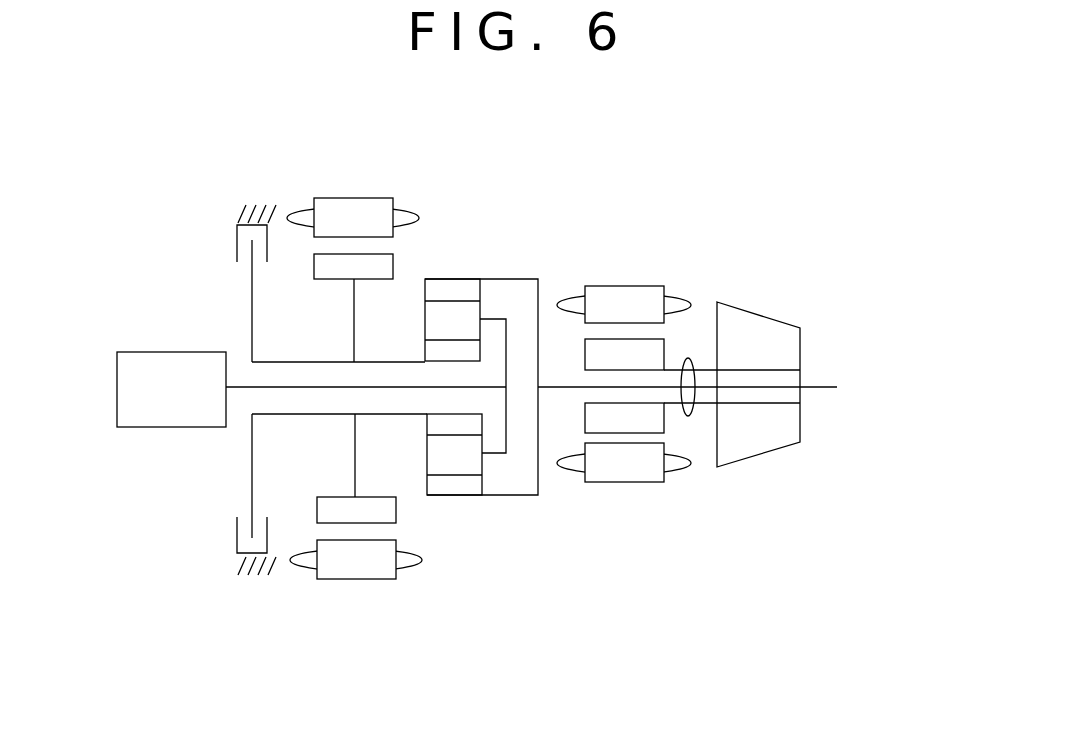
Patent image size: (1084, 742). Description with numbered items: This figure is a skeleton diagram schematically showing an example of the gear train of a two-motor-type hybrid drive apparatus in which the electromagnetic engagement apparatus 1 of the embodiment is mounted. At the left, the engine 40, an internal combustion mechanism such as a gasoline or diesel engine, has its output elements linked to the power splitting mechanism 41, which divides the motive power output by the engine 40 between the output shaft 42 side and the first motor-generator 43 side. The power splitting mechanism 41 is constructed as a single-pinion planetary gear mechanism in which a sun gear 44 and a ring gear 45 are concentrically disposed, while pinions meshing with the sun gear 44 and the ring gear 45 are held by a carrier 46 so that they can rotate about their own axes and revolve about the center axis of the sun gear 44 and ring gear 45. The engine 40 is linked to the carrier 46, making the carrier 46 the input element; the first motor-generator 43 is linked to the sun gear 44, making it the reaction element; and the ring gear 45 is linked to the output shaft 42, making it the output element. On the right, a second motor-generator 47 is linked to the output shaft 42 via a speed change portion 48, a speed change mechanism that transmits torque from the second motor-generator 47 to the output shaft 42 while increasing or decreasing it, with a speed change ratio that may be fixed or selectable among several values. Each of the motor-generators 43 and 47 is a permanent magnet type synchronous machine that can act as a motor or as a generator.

The electromagnetic engagement apparatus 1 is at (230, 183).
The engine 40 is at (148, 352).
The power splitting mechanism 41 is at (507, 230).
The output shaft 42 is at (826, 390).
The first motor-generator 43 is at (352, 183).
The sun gear 44 is at (427, 424).
The ring gear 45 is at (448, 278).
The carrier 46 is at (507, 442).
The second motor-generator 47 is at (627, 258).
The speed change portion 48 is at (760, 312).